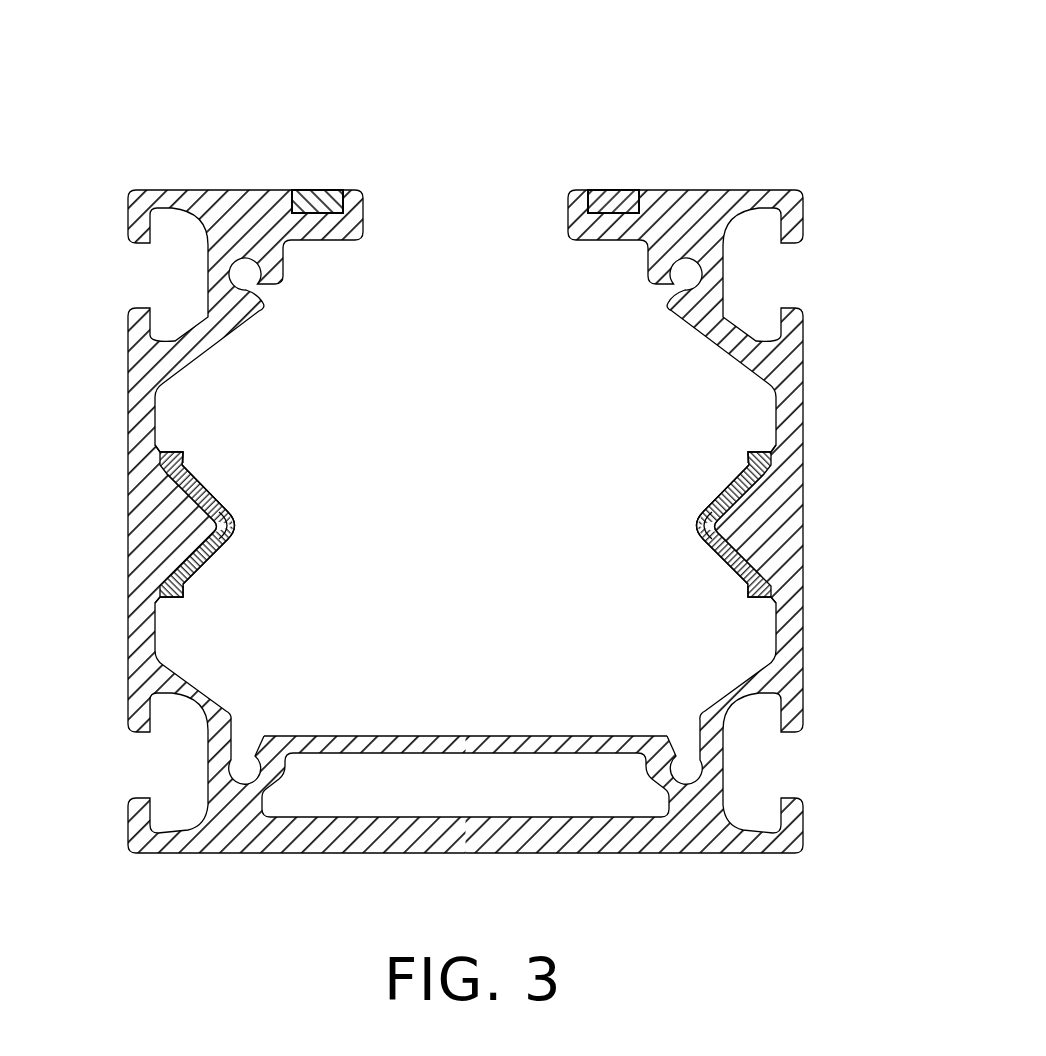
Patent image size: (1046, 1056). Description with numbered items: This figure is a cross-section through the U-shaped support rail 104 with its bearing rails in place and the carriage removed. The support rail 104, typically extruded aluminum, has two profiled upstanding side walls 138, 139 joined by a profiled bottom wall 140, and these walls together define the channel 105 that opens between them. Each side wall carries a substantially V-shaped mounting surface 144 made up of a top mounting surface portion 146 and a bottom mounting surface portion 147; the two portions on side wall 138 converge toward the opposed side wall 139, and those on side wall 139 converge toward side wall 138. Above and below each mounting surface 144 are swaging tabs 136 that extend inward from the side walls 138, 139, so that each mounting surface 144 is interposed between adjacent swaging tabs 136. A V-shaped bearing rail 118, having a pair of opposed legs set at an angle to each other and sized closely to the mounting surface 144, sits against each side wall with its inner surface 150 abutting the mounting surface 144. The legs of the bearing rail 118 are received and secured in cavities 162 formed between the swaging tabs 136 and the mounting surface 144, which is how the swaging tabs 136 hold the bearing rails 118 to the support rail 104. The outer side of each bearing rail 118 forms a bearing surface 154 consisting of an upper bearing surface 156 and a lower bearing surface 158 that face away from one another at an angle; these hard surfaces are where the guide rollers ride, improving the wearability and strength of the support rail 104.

The support rail 104 is at (474, 473).
The channel 105 is at (501, 494).
The bearing rail 118 is at (197, 497).
The swaging tab 136 is at (168, 452).
The side wall 138 is at (140, 407).
The side wall 139 is at (803, 343).
The bottom wall 140 is at (625, 845).
The mounting surface 144 is at (225, 535).
The top mounting surface portion 146 is at (186, 468).
The bottom mounting surface portion 147 is at (200, 575).
The inner surface 150 is at (202, 542).
The bearing surface 154 is at (230, 528).
The upper bearing surface 156 is at (205, 486).
The lower bearing surface 158 is at (217, 556).
The cavity 162 is at (167, 465).